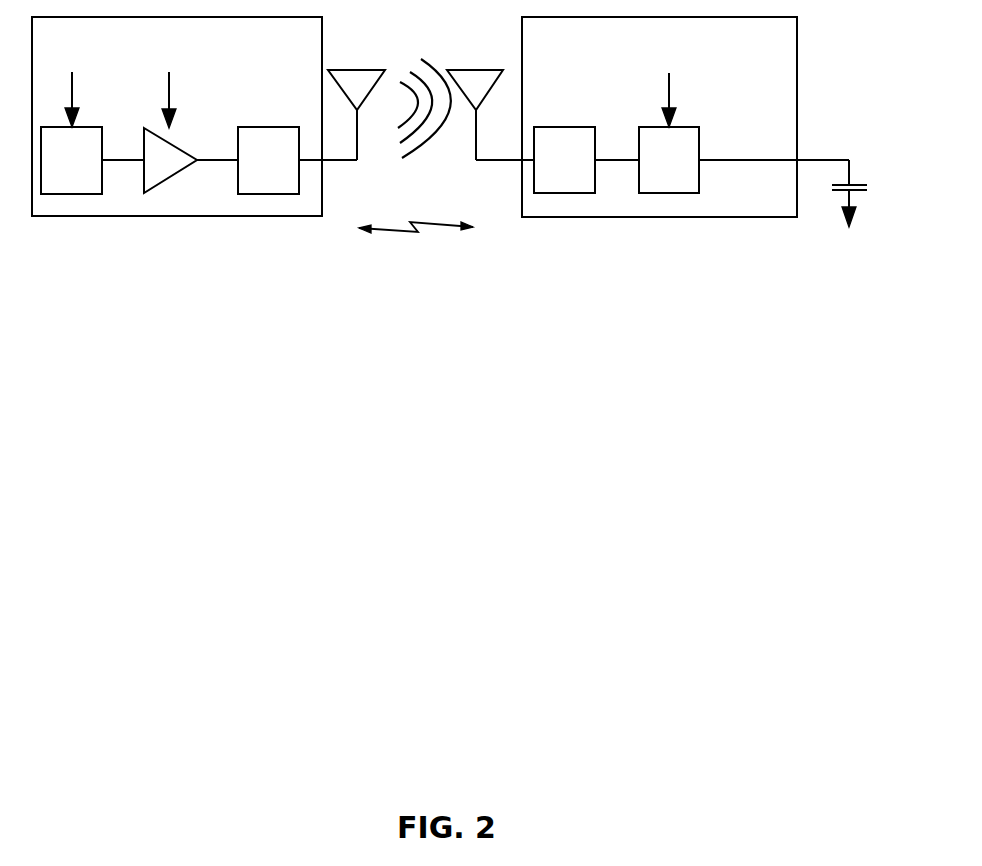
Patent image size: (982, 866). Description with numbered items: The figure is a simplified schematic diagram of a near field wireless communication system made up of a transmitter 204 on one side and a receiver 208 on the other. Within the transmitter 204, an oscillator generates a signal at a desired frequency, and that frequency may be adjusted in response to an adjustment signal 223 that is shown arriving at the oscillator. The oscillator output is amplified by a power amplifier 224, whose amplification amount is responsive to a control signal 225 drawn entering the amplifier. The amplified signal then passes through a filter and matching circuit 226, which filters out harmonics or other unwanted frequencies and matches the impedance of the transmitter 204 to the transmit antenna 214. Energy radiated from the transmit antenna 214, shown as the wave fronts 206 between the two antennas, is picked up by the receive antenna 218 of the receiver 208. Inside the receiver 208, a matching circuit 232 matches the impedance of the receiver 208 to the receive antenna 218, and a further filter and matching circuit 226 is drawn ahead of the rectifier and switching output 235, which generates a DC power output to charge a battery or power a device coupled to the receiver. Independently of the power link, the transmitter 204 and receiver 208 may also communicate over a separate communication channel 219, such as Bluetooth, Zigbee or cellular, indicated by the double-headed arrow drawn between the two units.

The transmitter 204 is at (193, 46).
The transmit antenna 214 is at (86, 183).
The adjustment signal 223 is at (72, 88).
The control signal 225 is at (169, 88).
The power amplifier 224 is at (179, 169).
The filter and matching circuit 226 is at (284, 171).
The wireless power signal 206 is at (419, 157).
The receive antenna 218 is at (489, 70).
The communication channel 219 is at (422, 246).
The receiver 208 is at (674, 48).
The matching circuit 232 is at (580, 172).
The rectifier/switching output 235 is at (669, 90).